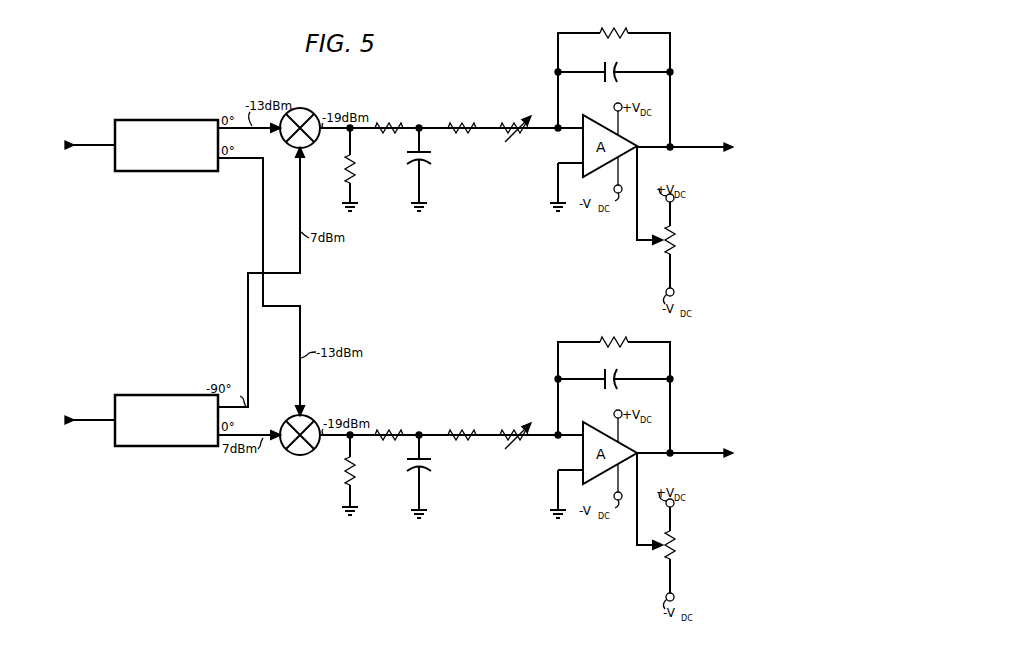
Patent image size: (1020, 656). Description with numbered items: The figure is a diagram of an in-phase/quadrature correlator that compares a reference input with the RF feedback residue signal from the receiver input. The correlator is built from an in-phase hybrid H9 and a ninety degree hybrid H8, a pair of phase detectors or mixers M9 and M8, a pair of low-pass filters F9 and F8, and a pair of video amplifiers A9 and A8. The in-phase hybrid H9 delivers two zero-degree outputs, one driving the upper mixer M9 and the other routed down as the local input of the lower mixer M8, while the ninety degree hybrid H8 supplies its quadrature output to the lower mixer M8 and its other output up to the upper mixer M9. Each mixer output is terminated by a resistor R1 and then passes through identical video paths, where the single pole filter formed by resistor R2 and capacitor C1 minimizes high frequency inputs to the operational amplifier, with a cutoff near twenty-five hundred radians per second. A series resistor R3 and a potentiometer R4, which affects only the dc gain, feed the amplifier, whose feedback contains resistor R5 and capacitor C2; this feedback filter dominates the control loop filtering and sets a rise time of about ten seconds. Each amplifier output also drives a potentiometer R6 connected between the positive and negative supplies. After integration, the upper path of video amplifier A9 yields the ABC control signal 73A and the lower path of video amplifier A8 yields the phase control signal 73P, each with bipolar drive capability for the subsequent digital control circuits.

The in-phase hybrid H9 is at (141, 120).
The 90 degree hybrid H8 is at (141, 395).
The mixer M9 is at (302, 110).
The mixer M8 is at (287, 453).
The low-pass filter F9 is at (470, 244).
The low-pass filter F8 is at (466, 544).
The resistor R1 is at (353, 166).
The resistor R2 is at (378, 126).
The resistor R3 is at (449, 126).
The potentiometer R4 is at (514, 141).
The feedback resistor R5 is at (603, 30).
The potentiometer R6 is at (676, 549).
The capacitor C1 is at (431, 163).
The feedback capacitor C2 is at (617, 67).
The video amplifier A9 is at (612, 261).
The video amplifier A8 is at (602, 560).
The ABC control signal 73A is at (687, 147).
The phase control signal 73P is at (687, 453).